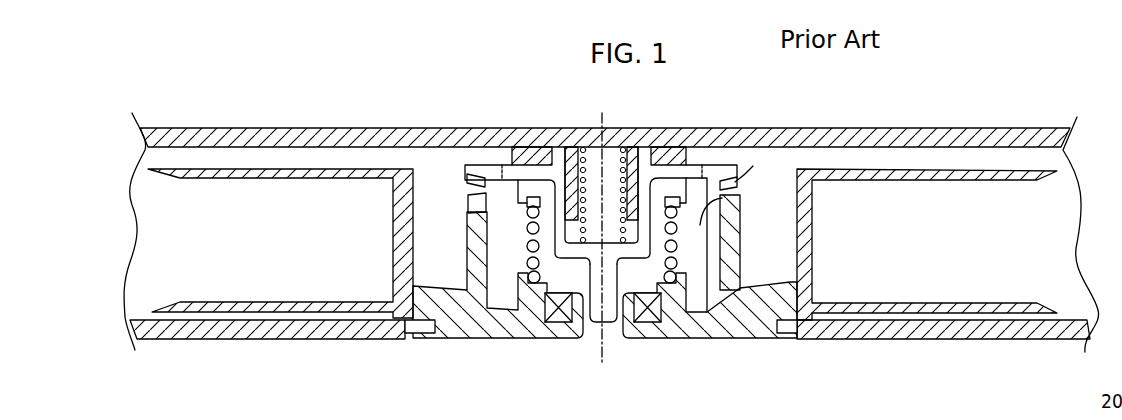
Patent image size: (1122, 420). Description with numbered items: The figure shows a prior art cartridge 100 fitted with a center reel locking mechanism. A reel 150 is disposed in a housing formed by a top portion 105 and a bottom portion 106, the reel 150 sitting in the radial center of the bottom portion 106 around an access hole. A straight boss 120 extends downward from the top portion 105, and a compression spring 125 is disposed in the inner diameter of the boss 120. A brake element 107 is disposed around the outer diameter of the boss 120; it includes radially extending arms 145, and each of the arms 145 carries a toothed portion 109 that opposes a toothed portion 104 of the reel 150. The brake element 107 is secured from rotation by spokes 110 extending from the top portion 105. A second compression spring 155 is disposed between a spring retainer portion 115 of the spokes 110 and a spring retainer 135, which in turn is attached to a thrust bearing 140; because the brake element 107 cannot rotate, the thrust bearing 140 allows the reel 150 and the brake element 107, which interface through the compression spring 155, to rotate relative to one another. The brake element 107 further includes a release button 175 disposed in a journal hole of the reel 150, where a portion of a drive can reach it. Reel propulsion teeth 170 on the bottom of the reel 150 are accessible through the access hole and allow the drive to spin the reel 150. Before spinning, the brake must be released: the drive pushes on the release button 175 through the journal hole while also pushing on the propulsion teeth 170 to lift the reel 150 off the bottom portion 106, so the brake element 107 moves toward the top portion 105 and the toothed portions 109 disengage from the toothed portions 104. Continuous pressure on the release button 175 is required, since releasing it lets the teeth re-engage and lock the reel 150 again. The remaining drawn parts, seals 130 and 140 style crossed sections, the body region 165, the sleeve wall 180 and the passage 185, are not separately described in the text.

The cartridge 100 is at (1000, 113).
The toothed portion of reel 104 is at (462, 194).
The top portion 105 is at (272, 127).
The bottom portion 106 is at (232, 340).
The brake element 107 is at (483, 165).
The toothed portion 109 is at (450, 178).
The spokes 110 is at (517, 195).
The spring retainer portion 115 is at (532, 196).
The straight boss 120 is at (578, 160).
The compression spring 125 is at (614, 152).
The seal 130 is at (653, 325).
The spring retainer 135 is at (517, 306).
The thrust bearing 140 is at (555, 331).
The radially extending arms 145 is at (695, 177).
The reel 150 is at (323, 168).
The compression spring 155 is at (522, 240).
The valve body 165 is at (710, 340).
The reel propulsion teeth 170 is at (784, 337).
The release button 175 is at (591, 335).
The sleeve wall 180 is at (742, 226).
The passage 185 is at (737, 137).